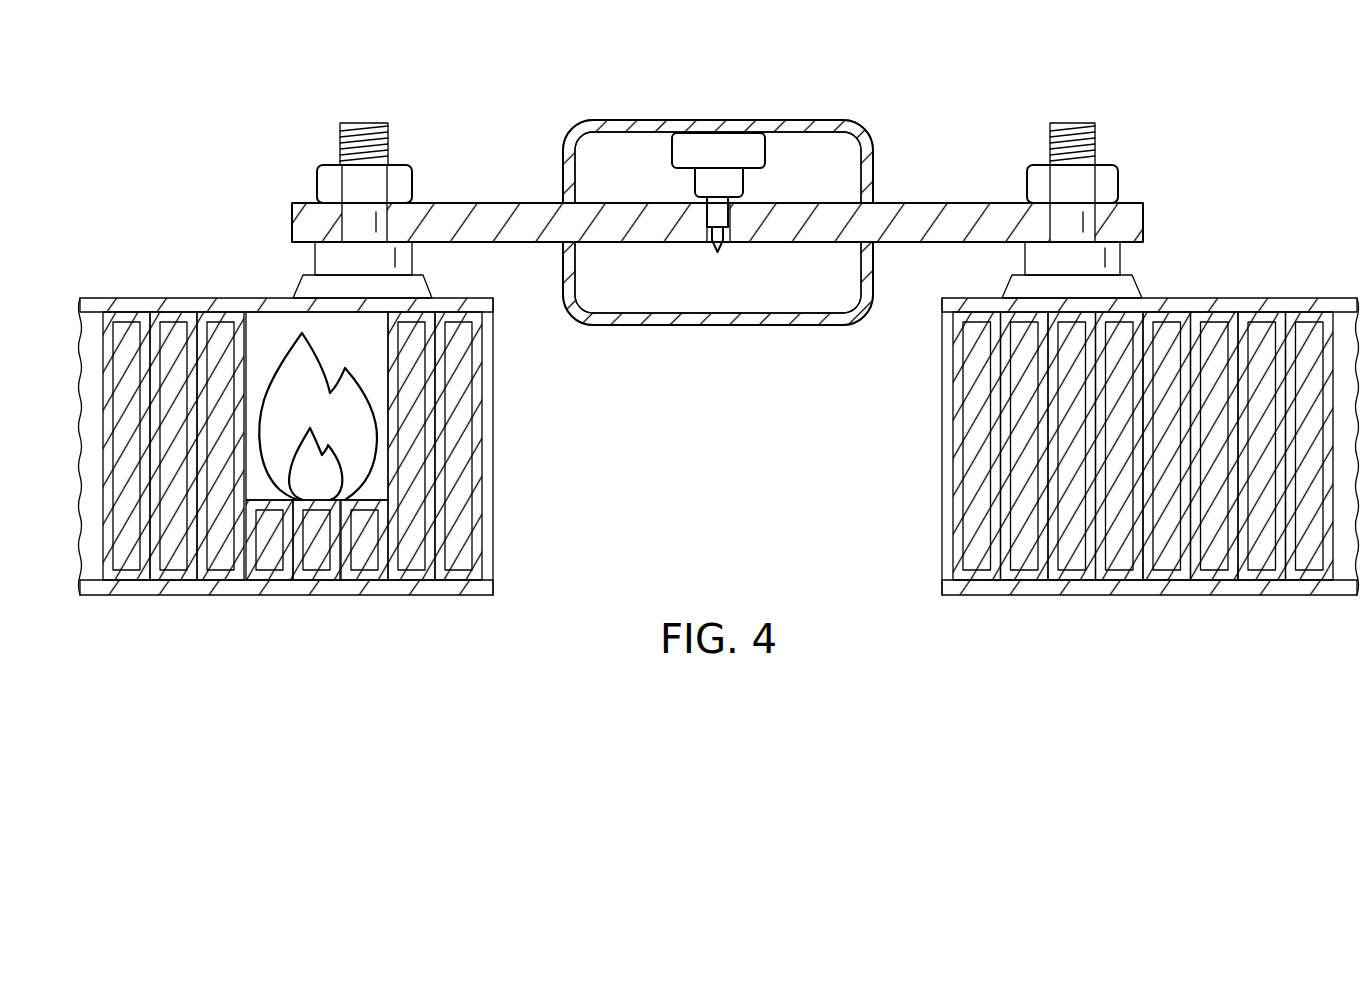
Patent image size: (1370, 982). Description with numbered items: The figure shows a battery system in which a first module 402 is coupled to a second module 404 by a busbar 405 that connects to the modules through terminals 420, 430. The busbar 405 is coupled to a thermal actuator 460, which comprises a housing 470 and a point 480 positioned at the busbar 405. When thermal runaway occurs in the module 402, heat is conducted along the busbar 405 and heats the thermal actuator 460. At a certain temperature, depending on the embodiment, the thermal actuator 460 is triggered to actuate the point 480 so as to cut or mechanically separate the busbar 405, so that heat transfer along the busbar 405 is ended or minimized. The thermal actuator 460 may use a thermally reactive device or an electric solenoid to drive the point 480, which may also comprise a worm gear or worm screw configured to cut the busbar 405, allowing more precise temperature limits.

The module 402 is at (182, 260).
The module 404 is at (1255, 260).
The busbar 405 is at (488, 202).
The terminal 420 is at (363, 122).
The terminal 430 is at (1073, 122).
The thermal actuator 460 is at (661, 95).
The housing 470 is at (717, 120).
The point 480 is at (732, 217).